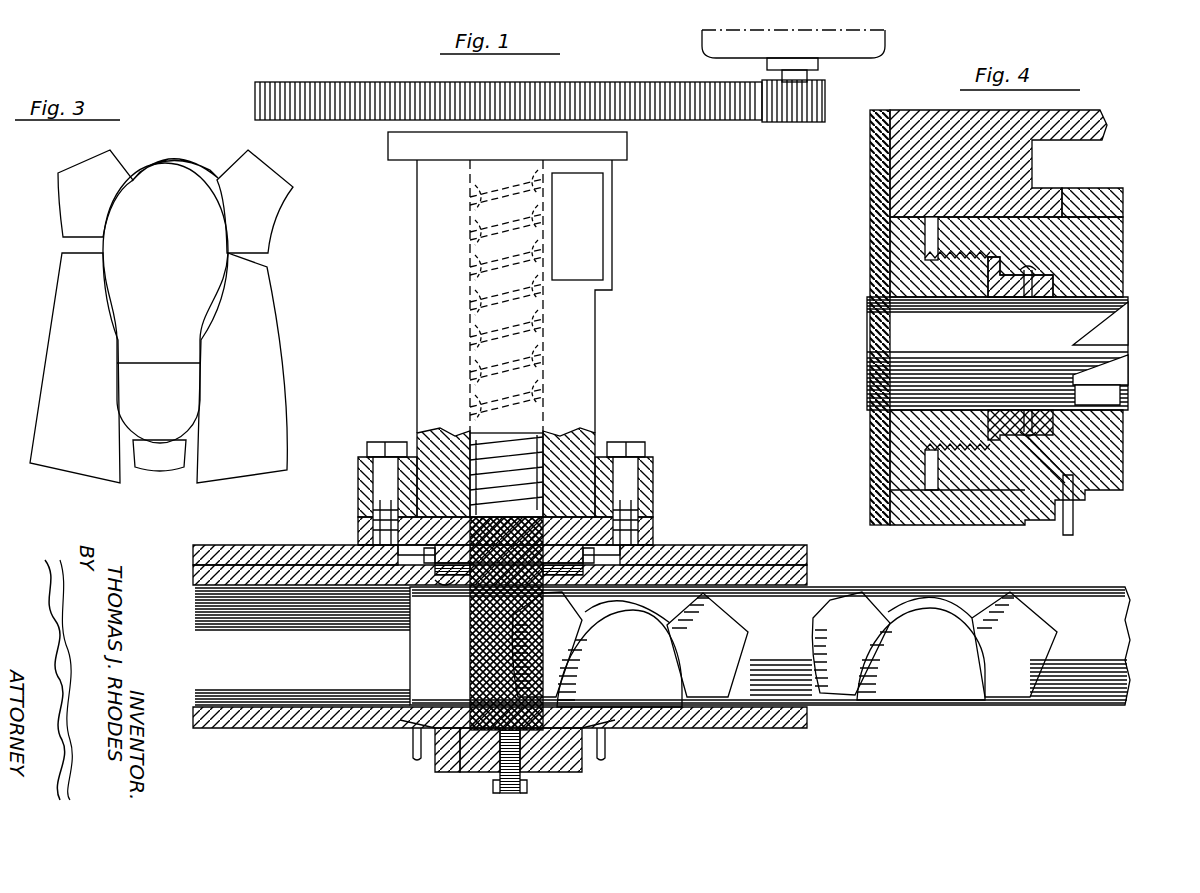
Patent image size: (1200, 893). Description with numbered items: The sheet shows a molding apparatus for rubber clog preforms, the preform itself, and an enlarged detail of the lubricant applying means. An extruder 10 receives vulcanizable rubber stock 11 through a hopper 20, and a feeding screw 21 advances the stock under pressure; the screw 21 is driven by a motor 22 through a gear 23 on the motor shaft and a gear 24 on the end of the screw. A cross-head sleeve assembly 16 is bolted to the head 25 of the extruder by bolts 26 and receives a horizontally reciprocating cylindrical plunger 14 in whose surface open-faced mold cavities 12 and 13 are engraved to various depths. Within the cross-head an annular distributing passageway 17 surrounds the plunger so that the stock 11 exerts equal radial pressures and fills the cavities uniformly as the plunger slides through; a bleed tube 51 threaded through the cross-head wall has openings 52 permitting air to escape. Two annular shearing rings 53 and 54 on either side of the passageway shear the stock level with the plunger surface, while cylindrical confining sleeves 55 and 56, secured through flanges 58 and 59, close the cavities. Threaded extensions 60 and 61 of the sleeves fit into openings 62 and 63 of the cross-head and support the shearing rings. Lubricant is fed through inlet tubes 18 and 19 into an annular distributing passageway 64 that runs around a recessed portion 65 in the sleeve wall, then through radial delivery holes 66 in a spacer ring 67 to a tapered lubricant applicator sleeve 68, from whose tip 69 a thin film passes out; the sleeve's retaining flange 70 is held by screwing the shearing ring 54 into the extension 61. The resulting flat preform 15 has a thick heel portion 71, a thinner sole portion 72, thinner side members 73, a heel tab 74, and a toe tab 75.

In FIG. 1, the extruder 10 is at (580, 312).
In FIG. 1, the plastic stock 11 is at (525, 463).
In FIG. 4, the plastic stock 11 is at (998, 163).
In FIG. 1, the mold cavity 12 is at (630, 674).
In FIG. 4, the mold cavity 12 is at (1118, 372).
In FIG. 1, the mold cavity 13 is at (940, 685).
In FIG. 1, the cylindrical plunger 14 is at (800, 600).
In FIG. 4, the cylindrical plunger 14 is at (870, 368).
In FIG. 3, the preform 15 is at (285, 315).
In FIG. 1, the cross-head sleeve assembly 16 is at (413, 773).
In FIG. 4, the cross-head sleeve assembly 16 is at (1047, 164).
In FIG. 1, the annular distributing passageway 17 is at (562, 772).
In FIG. 1, the lubricating duct 18 is at (411, 748).
In FIG. 1, the lubricating duct 19 is at (606, 748).
In FIG. 4, the lubricating duct 19 is at (1075, 527).
In FIG. 1, the hopper 20 is at (597, 205).
In FIG. 1, the feeding screw 21 is at (548, 432).
In FIG. 4, the feeding screw 21 is at (880, 317).
In FIG. 1, the motor 22 is at (706, 46).
In FIG. 1, the gear 23 is at (797, 122).
In FIG. 1, the gear 24 is at (385, 86).
In FIG. 1, the head 25 is at (615, 483).
In FIG. 1, the bolt 26 is at (641, 445).
In FIG. 1, the tube 51 is at (520, 785).
In FIG. 1, the opening 52 is at (483, 773).
In FIG. 1, the shearing ring 53 is at (472, 585).
In FIG. 1, the shearing ring 54 is at (547, 644).
In FIG. 4, the shearing ring 54 is at (868, 427).
In FIG. 1, the confining sleeve 55 is at (258, 580).
In FIG. 1, the confining sleeve 56 is at (700, 572).
In FIG. 4, the confining sleeve 56 is at (1110, 462).
In FIG. 1, the flange 58 is at (430, 557).
In FIG. 1, the flange 59 is at (590, 560).
In FIG. 4, the flange 59 is at (1065, 195).
In FIG. 1, the threaded extension 60 is at (452, 593).
In FIG. 1, the threaded extension 61 is at (604, 625).
In FIG. 4, the threaded extension 61 is at (915, 232).
In FIG. 1, the opening 62 is at (440, 773).
In FIG. 1, the opening 63 is at (590, 768).
In FIG. 4, the opening 63 is at (930, 195).
In FIG. 4, the annular distributing passageway 64 is at (1010, 272).
In FIG. 4, the recessed portion 65 is at (1060, 255).
In FIG. 4, the radial delivery hole 66 is at (1026, 300).
In FIG. 4, the spacer ring 67 is at (1005, 440).
In FIG. 4, the lubricant applicator sleeve 68 is at (1010, 298).
In FIG. 4, the tip 69 is at (1048, 298).
In FIG. 4, the retaining flange 70 is at (985, 297).
In FIG. 3, the heel portion 71 is at (158, 387).
In FIG. 3, the sole portion 72 is at (165, 303).
In FIG. 3, the side member 73 is at (161, 316).
In FIG. 3, the heel tab 74 is at (148, 458).
In FIG. 3, the toe tab 75 is at (190, 157).